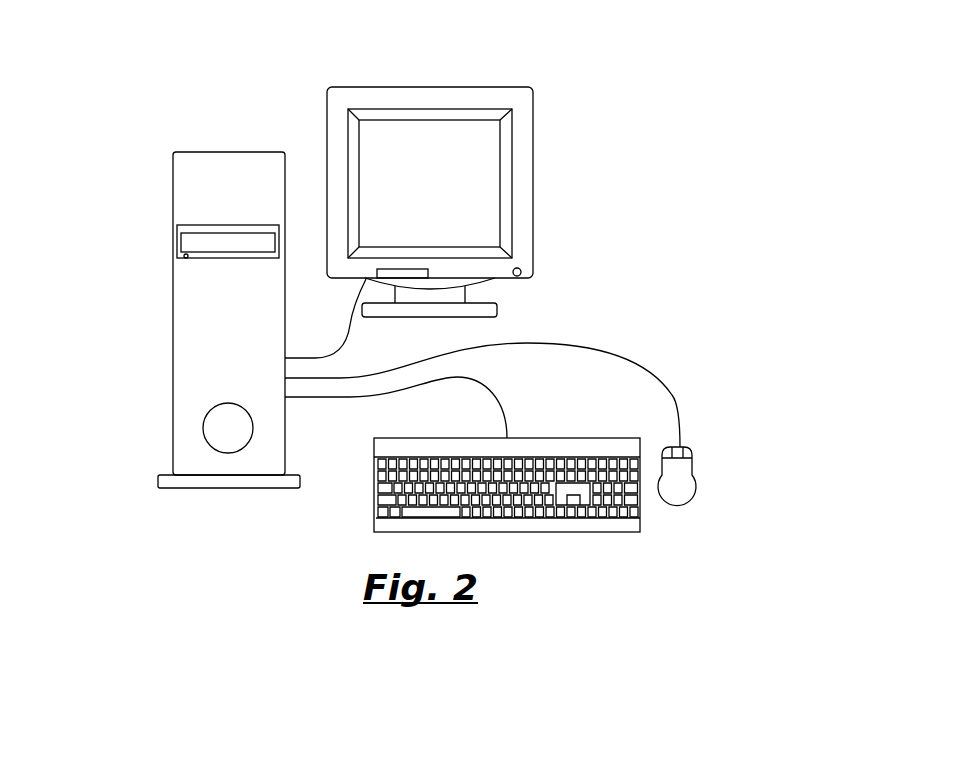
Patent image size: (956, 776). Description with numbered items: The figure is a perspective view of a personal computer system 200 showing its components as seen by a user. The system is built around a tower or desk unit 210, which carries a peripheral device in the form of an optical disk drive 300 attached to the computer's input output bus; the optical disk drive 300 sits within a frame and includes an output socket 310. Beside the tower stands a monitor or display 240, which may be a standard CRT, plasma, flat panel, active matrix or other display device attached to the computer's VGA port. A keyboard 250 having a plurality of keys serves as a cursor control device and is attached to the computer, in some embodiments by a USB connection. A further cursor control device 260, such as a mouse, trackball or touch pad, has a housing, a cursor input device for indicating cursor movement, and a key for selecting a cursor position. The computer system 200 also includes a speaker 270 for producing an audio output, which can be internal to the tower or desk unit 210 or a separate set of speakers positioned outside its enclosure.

The personal computer system 200 is at (585, 207).
The tower or desk unit 210 is at (173, 333).
The monitor or display 240 is at (428, 88).
The keyboard 250 is at (536, 443).
The cursor control device 260 is at (688, 483).
The speaker 270 is at (205, 418).
The optical disk drive 300 is at (210, 232).
The output socket 310 is at (184, 257).